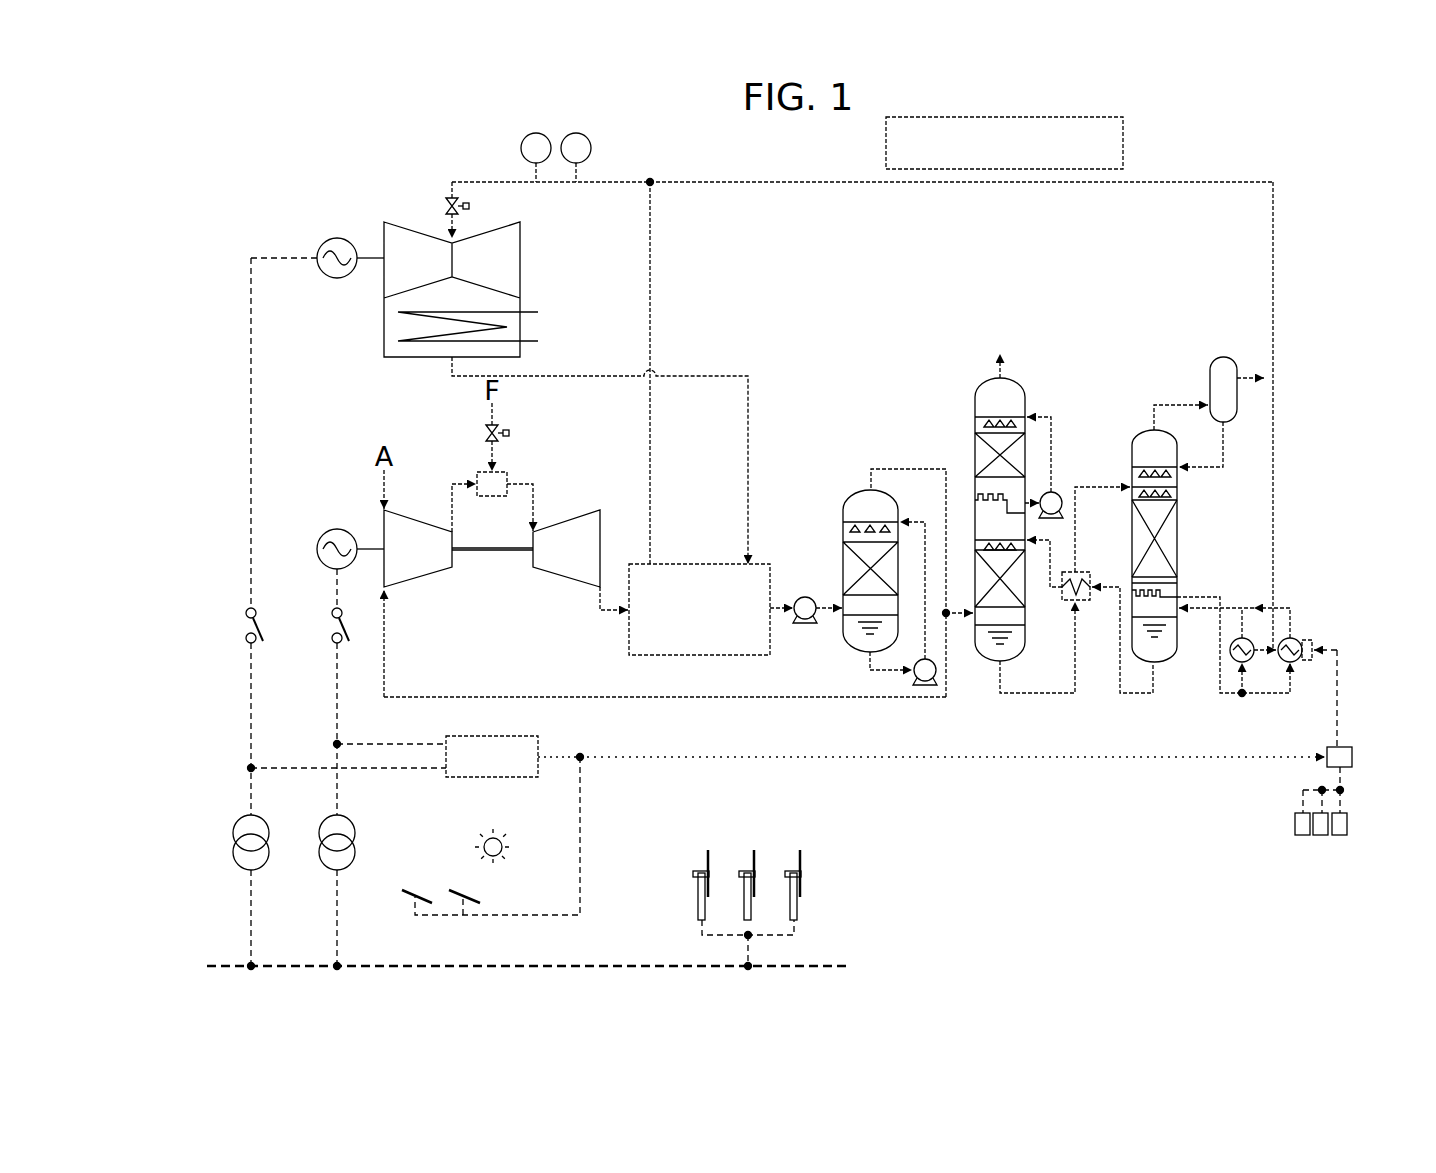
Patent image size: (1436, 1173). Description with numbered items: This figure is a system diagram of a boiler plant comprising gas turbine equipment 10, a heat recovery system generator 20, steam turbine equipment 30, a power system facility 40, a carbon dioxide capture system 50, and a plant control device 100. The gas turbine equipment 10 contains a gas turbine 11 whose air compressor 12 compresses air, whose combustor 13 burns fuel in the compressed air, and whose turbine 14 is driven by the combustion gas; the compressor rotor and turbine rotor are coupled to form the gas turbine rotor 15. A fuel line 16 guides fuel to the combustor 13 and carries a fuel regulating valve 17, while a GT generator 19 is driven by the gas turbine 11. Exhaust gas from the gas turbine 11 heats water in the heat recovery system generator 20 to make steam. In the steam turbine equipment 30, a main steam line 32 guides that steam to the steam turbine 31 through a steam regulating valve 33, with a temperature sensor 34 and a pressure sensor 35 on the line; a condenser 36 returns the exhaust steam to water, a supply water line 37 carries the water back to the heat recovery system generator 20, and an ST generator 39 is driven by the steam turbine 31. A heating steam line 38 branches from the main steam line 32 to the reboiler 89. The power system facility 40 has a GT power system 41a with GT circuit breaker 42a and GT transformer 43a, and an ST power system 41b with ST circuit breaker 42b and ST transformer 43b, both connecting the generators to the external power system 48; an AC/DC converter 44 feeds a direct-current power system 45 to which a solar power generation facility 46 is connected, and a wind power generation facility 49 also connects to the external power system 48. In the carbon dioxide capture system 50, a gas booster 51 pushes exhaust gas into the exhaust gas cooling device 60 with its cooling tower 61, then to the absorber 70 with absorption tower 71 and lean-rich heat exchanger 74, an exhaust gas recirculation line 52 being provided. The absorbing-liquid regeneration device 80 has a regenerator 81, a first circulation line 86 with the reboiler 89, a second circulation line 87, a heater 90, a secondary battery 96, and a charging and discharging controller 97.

The gas turbine equipment 10 is at (462, 535).
The gas turbine 11 is at (577, 535).
The air compressor 12 is at (424, 585).
The combustor 13 is at (508, 472).
The turbine 14 is at (560, 585).
The gas turbine rotor 15 is at (492, 552).
The fuel line 16 is at (487, 418).
The fuel regulating valve 17 is at (510, 432).
The GT generator 19 is at (316, 549).
The heat recovery system generator 20 is at (612, 632).
The steam turbine equipment 30 is at (463, 270).
The steam turbine 31 is at (533, 268).
The main steam line 32 is at (652, 258).
The steam regulating valve 33 is at (447, 200).
The temperature sensor 34 is at (520, 148).
The pressure sensor 35 is at (592, 148).
The condenser 36 is at (382, 358).
The supply water line 37 is at (712, 375).
The heating steam line 38 is at (1275, 290).
The ST generator 39 is at (337, 280).
The power system facility 40 is at (247, 712).
The GT power system 41a is at (335, 585).
The ST power system 41b is at (249, 415).
The GT circuit breaker 42a is at (332, 628).
The ST circuit breaker 42b is at (246, 628).
The GT transformer 43a is at (352, 822).
The ST transformer 43b is at (232, 835).
The AC/DC converter 44 is at (492, 736).
The direct-current power system 45 is at (990, 760).
The solar power generation facility 46 is at (400, 900).
The external power system 48 is at (818, 962).
The wind power generation facility 49 is at (690, 885).
The carbon dioxide capture system 50 is at (898, 410).
The gas booster 51 is at (805, 630).
The exhaust gas recirculation line 52 is at (484, 695).
The exhaust gas cooling device 60 is at (859, 550).
The cooling tower 61 is at (842, 522).
The absorber 70 is at (1002, 499).
The absorption tower 71 is at (1018, 383).
The lean-rich heat exchanger 74 is at (1062, 605).
The absorbing-liquid regeneration device 80 is at (1177, 524).
The regenerator 81 is at (1178, 487).
The first circulation line 86 is at (1240, 688).
The second circulation line 87 is at (1288, 688).
The reboiler 89 is at (1222, 660).
The heater 90 is at (1296, 664).
The secondary battery 96 is at (1303, 836).
The charging and discharging controller 97 is at (1353, 757).
The plant control device 100 is at (1125, 143).